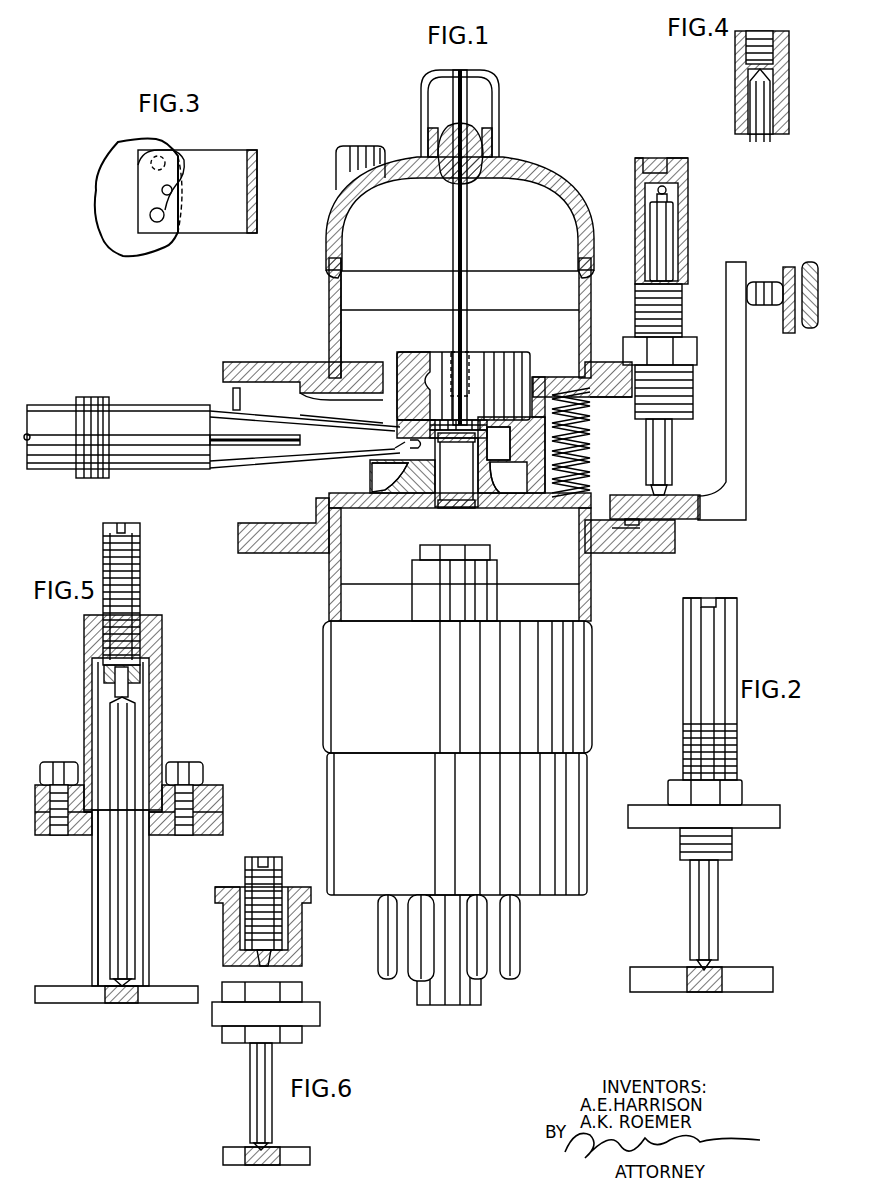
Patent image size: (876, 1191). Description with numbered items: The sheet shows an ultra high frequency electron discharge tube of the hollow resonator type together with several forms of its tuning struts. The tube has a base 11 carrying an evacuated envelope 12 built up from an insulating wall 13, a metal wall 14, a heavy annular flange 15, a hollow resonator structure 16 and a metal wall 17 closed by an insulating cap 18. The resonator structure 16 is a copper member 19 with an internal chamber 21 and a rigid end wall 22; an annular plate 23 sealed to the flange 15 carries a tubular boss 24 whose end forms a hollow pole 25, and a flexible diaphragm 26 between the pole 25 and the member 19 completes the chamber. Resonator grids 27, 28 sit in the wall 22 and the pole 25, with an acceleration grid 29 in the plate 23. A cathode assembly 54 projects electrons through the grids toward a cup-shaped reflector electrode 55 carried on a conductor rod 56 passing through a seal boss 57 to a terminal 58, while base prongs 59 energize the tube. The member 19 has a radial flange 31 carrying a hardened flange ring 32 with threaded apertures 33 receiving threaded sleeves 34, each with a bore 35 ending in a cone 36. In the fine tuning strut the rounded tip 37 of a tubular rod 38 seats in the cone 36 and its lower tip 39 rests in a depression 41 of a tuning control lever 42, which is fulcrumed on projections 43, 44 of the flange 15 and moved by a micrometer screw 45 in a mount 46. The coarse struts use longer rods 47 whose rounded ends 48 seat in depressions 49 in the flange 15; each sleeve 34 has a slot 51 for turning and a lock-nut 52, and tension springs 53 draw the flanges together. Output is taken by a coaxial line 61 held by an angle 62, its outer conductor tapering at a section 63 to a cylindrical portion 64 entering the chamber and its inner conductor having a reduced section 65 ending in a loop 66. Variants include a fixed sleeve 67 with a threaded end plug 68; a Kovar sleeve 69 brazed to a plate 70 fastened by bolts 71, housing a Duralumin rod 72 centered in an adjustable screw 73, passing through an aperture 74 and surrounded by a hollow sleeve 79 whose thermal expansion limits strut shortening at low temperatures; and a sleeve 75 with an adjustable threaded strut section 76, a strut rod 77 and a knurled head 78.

In FIG. 1, the base 11 is at (568, 780).
In FIG. 1, the evacuated envelope 12 is at (329, 323).
In FIG. 1, the insulating wall 13 is at (572, 656).
In FIG. 1, the metal wall 14 is at (591, 569).
In FIG. 1, the annular metal flange 15 is at (240, 536).
In FIG. 3, the annular metal flange 15 is at (113, 160).
In FIG. 5, the annular metal flange 15 is at (147, 1003).
In FIG. 6, the annular metal flange 15 is at (225, 1151).
In FIG. 2, the annular metal flange 15 is at (761, 972).
In FIG. 1, the hollow resonator structure 16 is at (360, 372).
In FIG. 1, the cylindrical metal wall 17 is at (591, 320).
In FIG. 1, the insulating cap 18 is at (522, 168).
In FIG. 1, the conductive member 19 is at (528, 462).
In FIG. 1, the internal cylindrical chamber 21 is at (500, 427).
In FIG. 1, the rigid end wall 22 is at (485, 420).
In FIG. 1, the annular metal plate 23 is at (393, 508).
In FIG. 1, the tubular boss 24 is at (420, 478).
In FIG. 1, the hollow pole 25 is at (478, 440).
In FIG. 1, the diaphragm 26 is at (494, 466).
In FIG. 1, the resonator grid 27 is at (450, 420).
In FIG. 1, the resonator grid 28 is at (440, 446).
In FIG. 1, the acceleration grid 29 is at (468, 497).
In FIG. 1, the radial flange 31 is at (602, 397).
In FIG. 5, the radial flange 31 is at (210, 835).
In FIG. 6, the radial flange 31 is at (320, 1020).
In FIG. 1, the flange ring 32 is at (693, 379).
In FIG. 2, the flange ring 32 is at (758, 828).
In FIG. 1, the threaded aperture 33 is at (602, 364).
In FIG. 1, the threaded sleeve 34 is at (360, 152).
In FIG. 2, the threaded sleeve 34 is at (737, 659).
In FIG. 1, the central bore 35 is at (676, 253).
In FIG. 1, the conical end 36 is at (678, 191).
In FIG. 1, the rounded tip 37 is at (658, 191).
In FIG. 1, the tubular rod 38 is at (672, 455).
In FIG. 1, the rounded tip 39 is at (668, 491).
In FIG. 1, the conical depression 41 is at (640, 495).
In FIG. 3, the conical depression 41 is at (184, 160).
In FIG. 1, the tuning control lever 42 is at (746, 381).
In FIG. 3, the tuning control lever 42 is at (222, 160).
In FIG. 3, the hard steel projection 43 is at (150, 213).
In FIG. 1, the hard steel projection 44 is at (640, 535).
In FIG. 3, the hard steel projection 44 is at (158, 160).
In FIG. 1, the micrometer screw 45 is at (808, 328).
In FIG. 1, the mount 46 is at (788, 268).
In FIG. 2, the tubular rod 47 is at (690, 904).
In FIG. 2, the rounded lower end 48 is at (697, 966).
In FIG. 1, the conical depression 49 is at (650, 526).
In FIG. 5, the conical depression 49 is at (140, 985).
In FIG. 6, the conical depression 49 is at (285, 1151).
In FIG. 2, the conical depression 49 is at (722, 972).
In FIG. 1, the slot 51 is at (650, 158).
In FIG. 2, the slot 51 is at (718, 600).
In FIG. 1, the lock-nut 52 is at (690, 337).
In FIG. 2, the lock-nut 52 is at (740, 786).
In FIG. 1, the tension spring 53 is at (590, 466).
In FIG. 1, the cathode assembly 54 is at (492, 606).
In FIG. 1, the reflector electrode 55 is at (520, 358).
In FIG. 1, the conductor rod 56 is at (467, 208).
In FIG. 1, the vacuum seal boss 57 is at (494, 138).
In FIG. 1, the metal terminal 58 is at (422, 112).
In FIG. 1, the base prongs 59 is at (522, 952).
In FIG. 1, the coaxial conductor output line 61 is at (152, 407).
In FIG. 1, the angle 62 is at (232, 393).
In FIG. 1, the tapered section 63 is at (303, 457).
In FIG. 1, the cylindrical portion 64 is at (400, 460).
In FIG. 1, the reduced section 65 is at (330, 405).
In FIG. 1, the loop 66 is at (416, 438).
In FIG. 4, the sleeve 67 is at (778, 79).
In FIG. 4, the end plug 68 is at (746, 46).
In FIG. 5, the Kovar sleeve 69 is at (162, 664).
In FIG. 5, the plate 70 is at (212, 785).
In FIG. 5, the bolts 71 is at (62, 762).
In FIG. 5, the tubular rod 72 is at (135, 906).
In FIG. 5, the screw 73 is at (140, 542).
In FIG. 5, the aperture 74 is at (90, 835).
In FIG. 6, the sleeve 75 is at (302, 951).
In FIG. 6, the threaded strut section 76 is at (281, 866).
In FIG. 6, the strut rod 77 is at (250, 1082).
In FIG. 6, the knurled head 78 is at (220, 890).
In FIG. 5, the hollow sleeve 79 is at (96, 905).